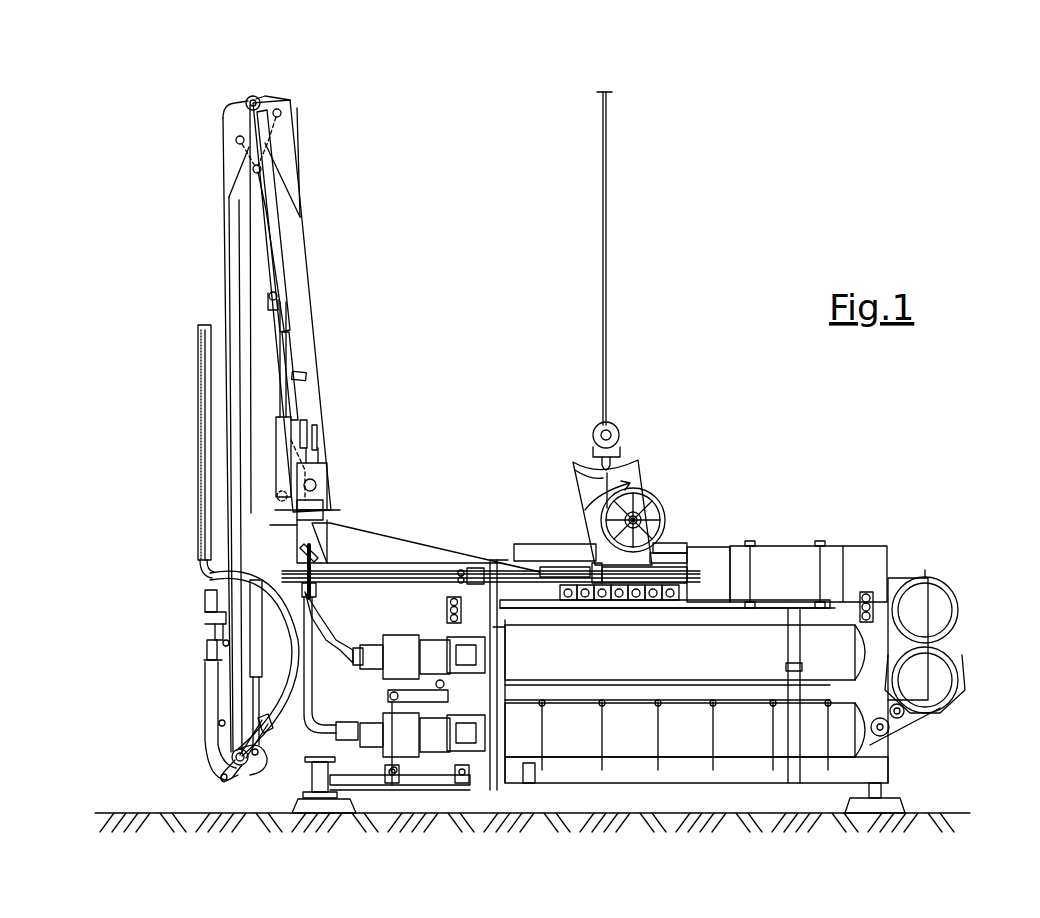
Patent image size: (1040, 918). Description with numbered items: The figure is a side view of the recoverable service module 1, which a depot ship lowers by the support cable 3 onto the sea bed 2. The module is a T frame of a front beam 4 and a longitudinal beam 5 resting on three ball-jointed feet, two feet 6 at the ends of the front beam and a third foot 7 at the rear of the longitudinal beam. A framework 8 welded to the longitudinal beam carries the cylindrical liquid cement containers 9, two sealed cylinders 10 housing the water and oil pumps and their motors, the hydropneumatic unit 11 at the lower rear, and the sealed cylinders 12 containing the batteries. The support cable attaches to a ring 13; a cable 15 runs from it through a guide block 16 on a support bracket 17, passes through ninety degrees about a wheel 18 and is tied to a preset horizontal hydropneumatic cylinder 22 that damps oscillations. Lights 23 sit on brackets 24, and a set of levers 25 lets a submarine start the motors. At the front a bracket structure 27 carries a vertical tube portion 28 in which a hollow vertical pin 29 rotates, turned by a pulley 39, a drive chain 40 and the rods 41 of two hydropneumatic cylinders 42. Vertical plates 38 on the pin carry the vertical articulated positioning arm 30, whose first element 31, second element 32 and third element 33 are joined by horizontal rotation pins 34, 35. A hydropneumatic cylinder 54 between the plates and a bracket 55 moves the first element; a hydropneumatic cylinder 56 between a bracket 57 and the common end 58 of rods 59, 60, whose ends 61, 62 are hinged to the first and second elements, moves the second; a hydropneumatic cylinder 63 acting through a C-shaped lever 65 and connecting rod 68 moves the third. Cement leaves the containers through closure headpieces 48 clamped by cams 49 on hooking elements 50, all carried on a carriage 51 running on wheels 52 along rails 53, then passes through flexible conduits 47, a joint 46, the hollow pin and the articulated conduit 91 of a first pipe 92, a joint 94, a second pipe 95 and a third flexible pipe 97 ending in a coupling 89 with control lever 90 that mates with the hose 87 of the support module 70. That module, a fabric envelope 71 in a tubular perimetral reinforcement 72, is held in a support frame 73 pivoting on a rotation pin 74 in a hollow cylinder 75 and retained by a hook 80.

The recoverable service module 1 is at (795, 533).
The sea bed 2 is at (958, 813).
The support cable 3 is at (607, 400).
The front beam 4 is at (310, 778).
The longitudinal beam 5 is at (624, 775).
The feet 6 is at (320, 813).
The third foot 7 is at (875, 814).
The framework 8 is at (494, 585).
The cylindrical liquid cement containers 9 is at (748, 653).
The sealed cylinders 10 is at (766, 556).
The hydropneumatic unit 11 is at (905, 715).
The sealed cylinders 12 is at (950, 600).
The ring 13 is at (619, 433).
The cable 15 is at (580, 483).
The guide block 16 is at (592, 503).
The support bracket 17 is at (624, 473).
The wheel 18 is at (652, 498).
The horizontal hydropneumatic cylinder 22 is at (526, 544).
The position lights and illumination lights 23 is at (447, 602).
The brackets 24 is at (472, 568).
The set of levers 25 is at (548, 735).
The bracket structure 27 is at (376, 545).
The vertical tube portion 28 is at (297, 538).
The hollow vertical pin 29 is at (325, 509).
The vertical articulated positioning arm 30 is at (218, 230).
The first element 31 is at (314, 348).
The second element 32 is at (238, 285).
The third element 33 is at (206, 718).
The horizontal rotation pin 34 is at (246, 100).
The horizontal rotation pin 35 is at (242, 765).
The vertical plates 38 is at (293, 500).
The pulley 39 is at (299, 598).
The drive chain 40 is at (411, 570).
The rods 41 is at (540, 567).
The hydropneumatic cylinders 42 is at (665, 568).
The joint 46 is at (334, 628).
The flexible conduits 47 is at (312, 668).
The closure headpieces 48 is at (398, 655).
The cams 49 is at (470, 655).
The hooking element 50 is at (443, 672).
The carriage 51 is at (430, 684).
The wheels 52 is at (462, 780).
The rails 53 is at (418, 777).
The hydropneumatic cylinder 54 is at (276, 443).
The bracket 55 is at (268, 359).
The hydropneumatic cylinder 56 is at (274, 234).
The bracket 57 is at (265, 299).
The common end 58 is at (258, 178).
The rod 59 is at (272, 143).
The rod 60 is at (245, 150).
The end of rod 61 is at (281, 113).
The end of rod 62 is at (237, 137).
The hydropneumatic cylinder 63 is at (262, 667).
The C-shaped lever 65 is at (262, 762).
The connecting rod 68 is at (232, 770).
The support module 70 is at (192, 443).
The synthetic fibre fabric envelope 71 is at (205, 403).
The tubular perimetral reinforcement 72 is at (206, 372).
The support frame 73 is at (205, 618).
The rotation pin 74 is at (212, 632).
The hollow cylinder 75 is at (208, 652).
The hook 80 is at (206, 605).
The hose 87 is at (200, 575).
The instant connection and release coupling 89 is at (262, 600).
The control lever 90 is at (300, 572).
The articulated conduit 91 is at (297, 292).
The first pipe 92 is at (300, 310).
The joint 94 is at (262, 98).
The second pipe 95 is at (249, 322).
The third flexible pipe 97 is at (275, 736).